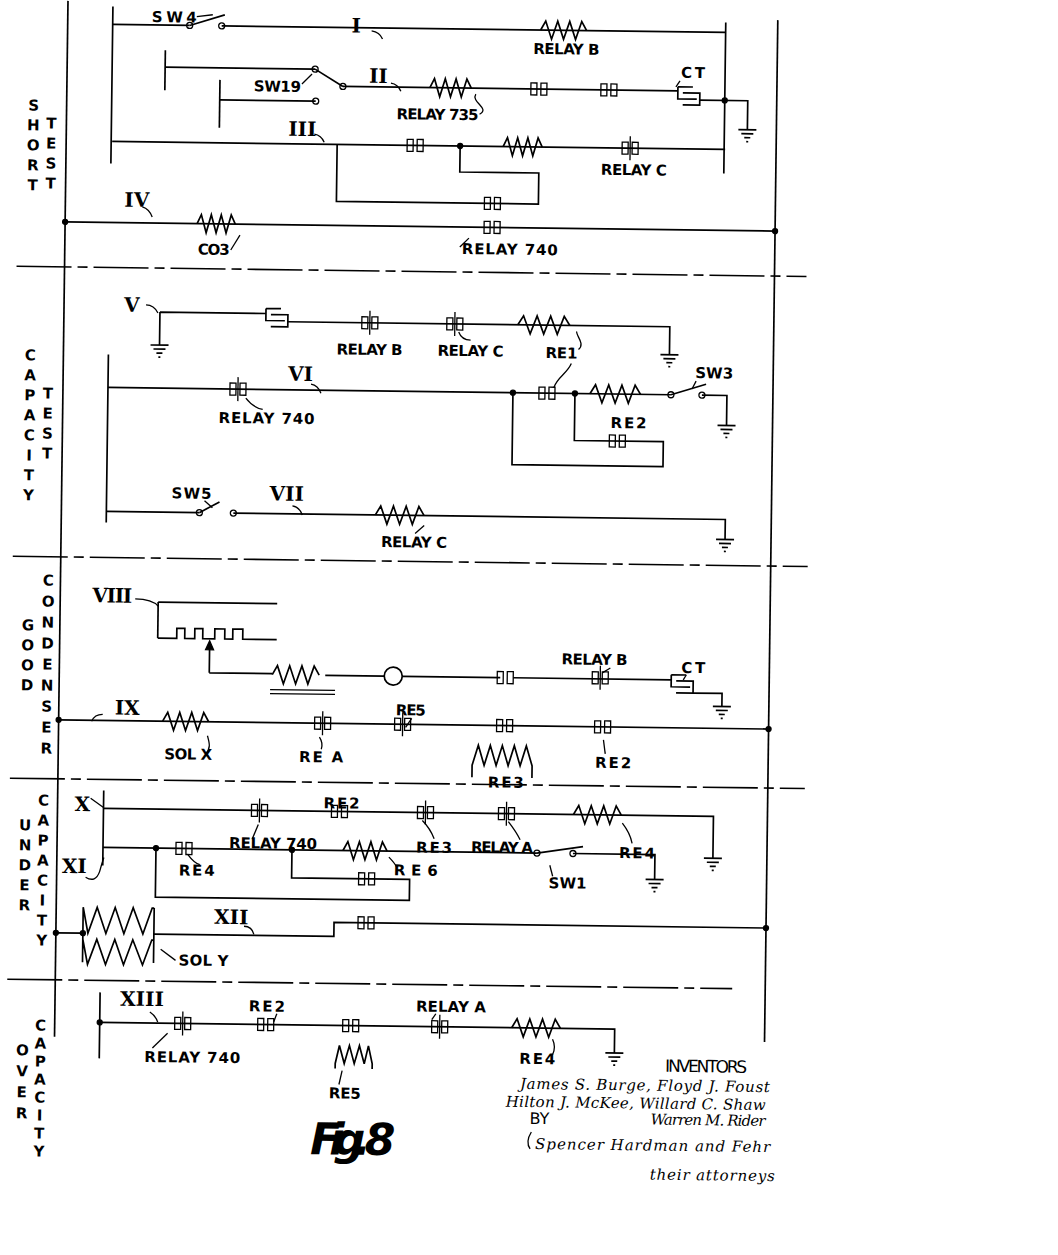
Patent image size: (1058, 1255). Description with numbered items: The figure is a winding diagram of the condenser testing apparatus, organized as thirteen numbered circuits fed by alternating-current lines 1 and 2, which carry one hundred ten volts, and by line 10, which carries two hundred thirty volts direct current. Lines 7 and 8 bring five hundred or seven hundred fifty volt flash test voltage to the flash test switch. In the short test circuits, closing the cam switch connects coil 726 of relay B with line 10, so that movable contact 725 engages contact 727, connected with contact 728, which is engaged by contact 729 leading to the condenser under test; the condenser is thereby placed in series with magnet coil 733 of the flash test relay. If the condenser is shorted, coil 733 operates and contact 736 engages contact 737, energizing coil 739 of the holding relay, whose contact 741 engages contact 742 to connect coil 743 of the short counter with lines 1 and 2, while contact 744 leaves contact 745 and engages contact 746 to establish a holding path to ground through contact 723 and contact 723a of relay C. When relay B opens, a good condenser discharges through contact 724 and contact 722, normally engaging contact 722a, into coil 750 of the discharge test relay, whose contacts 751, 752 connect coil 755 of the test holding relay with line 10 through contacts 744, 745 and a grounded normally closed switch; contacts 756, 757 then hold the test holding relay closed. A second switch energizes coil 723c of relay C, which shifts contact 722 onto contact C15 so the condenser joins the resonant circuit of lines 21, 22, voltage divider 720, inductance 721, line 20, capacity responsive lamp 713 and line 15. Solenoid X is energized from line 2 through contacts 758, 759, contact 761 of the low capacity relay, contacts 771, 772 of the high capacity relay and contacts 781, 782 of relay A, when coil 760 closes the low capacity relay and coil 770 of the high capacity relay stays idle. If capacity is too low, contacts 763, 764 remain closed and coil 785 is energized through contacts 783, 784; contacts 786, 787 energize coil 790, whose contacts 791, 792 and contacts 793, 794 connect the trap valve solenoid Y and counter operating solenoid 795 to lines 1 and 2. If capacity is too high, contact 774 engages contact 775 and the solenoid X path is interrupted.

The line 1 is at (68, 58).
The line 2 is at (779, 89).
The line 10 is at (113, 109).
The line 7 is at (221, 90).
The line 8 is at (166, 53).
The coil of relay B 726 is at (590, 22).
The magnet coil of flash test relay 733 is at (456, 72).
The movable contact of relay B 725 is at (536, 92).
The contact of relay B 727 is at (549, 90).
The contact of relay B 728 is at (606, 76).
The contact of relay B 729 is at (617, 76).
The contact of relay C 723a is at (627, 134).
The contact of relay C 723 is at (637, 134).
The contact of relay 735 736 is at (407, 148).
The contact of relay 735 737 is at (428, 150).
The coil of holding relay 740 739 is at (539, 148).
The contact of relay 740 744 is at (487, 192).
The contact of relay 740 746 is at (507, 186).
The contact of relay 740 741 is at (487, 221).
The contact of relay 740 742 is at (505, 221).
The coil of short counter CO3 743 is at (223, 213).
The contact of relay 740 745 is at (248, 380).
The contact of relay B 724 is at (389, 309).
The movable contact of relay C 722 is at (456, 315).
The contact of relay C 722a is at (463, 315).
The coil of discharge test relay RE1 750 is at (578, 312).
The contact of relay RE1 751 is at (541, 382).
The contact of relay RE1 752 is at (557, 394).
The coil of test holding relay RE2 755 is at (641, 382).
The contact of relay RE2 756 is at (628, 440).
The contact of relay RE2 757 is at (617, 440).
The coil of relay C 723c is at (413, 496).
The line 21 is at (285, 601).
The line 22 is at (285, 637).
The voltage divider 720 is at (195, 640).
The inductance 721 is at (337, 666).
The line 20 is at (365, 672).
The capacity responsive lamp 713 is at (404, 661).
The line 15 is at (448, 677).
The contact of relay C C15 is at (503, 665).
The contact of relay A 782 is at (320, 721).
The contact of relay A 781 is at (337, 723).
The contact of relay RE5 772 is at (408, 735).
The contact of relay RE5 771 is at (419, 732).
The contact of relay RE3 763 is at (505, 718).
The contact of relay RE3 761 is at (520, 718).
The contact of relay RE2 759 is at (601, 728).
The contact of relay RE2 758 is at (623, 727).
The coil of low capacity test relay RE3 760 is at (543, 752).
The contact of relay RE3 764 is at (429, 813).
The contact of relay A 783 is at (513, 812).
The contact of relay A 784 is at (521, 811).
The coil of relay RE4 785 is at (593, 810).
The contact of relay RE4 786 is at (190, 841).
The contact of relay RE4 787 is at (200, 841).
The coil of relay RE6 790 is at (389, 842).
The contact of relay RE6 791 is at (371, 874).
The contact of relay RE6 792 is at (385, 880).
The counter operating solenoid 795 is at (173, 934).
The contact of relay RE6 794 is at (370, 918).
The contact of relay RE6 793 is at (391, 920).
The contact of relay RE5 774 is at (359, 1012).
The contact of relay RE5 775 is at (371, 1012).
The coil of high capacity test relay RE5 770 is at (389, 1050).